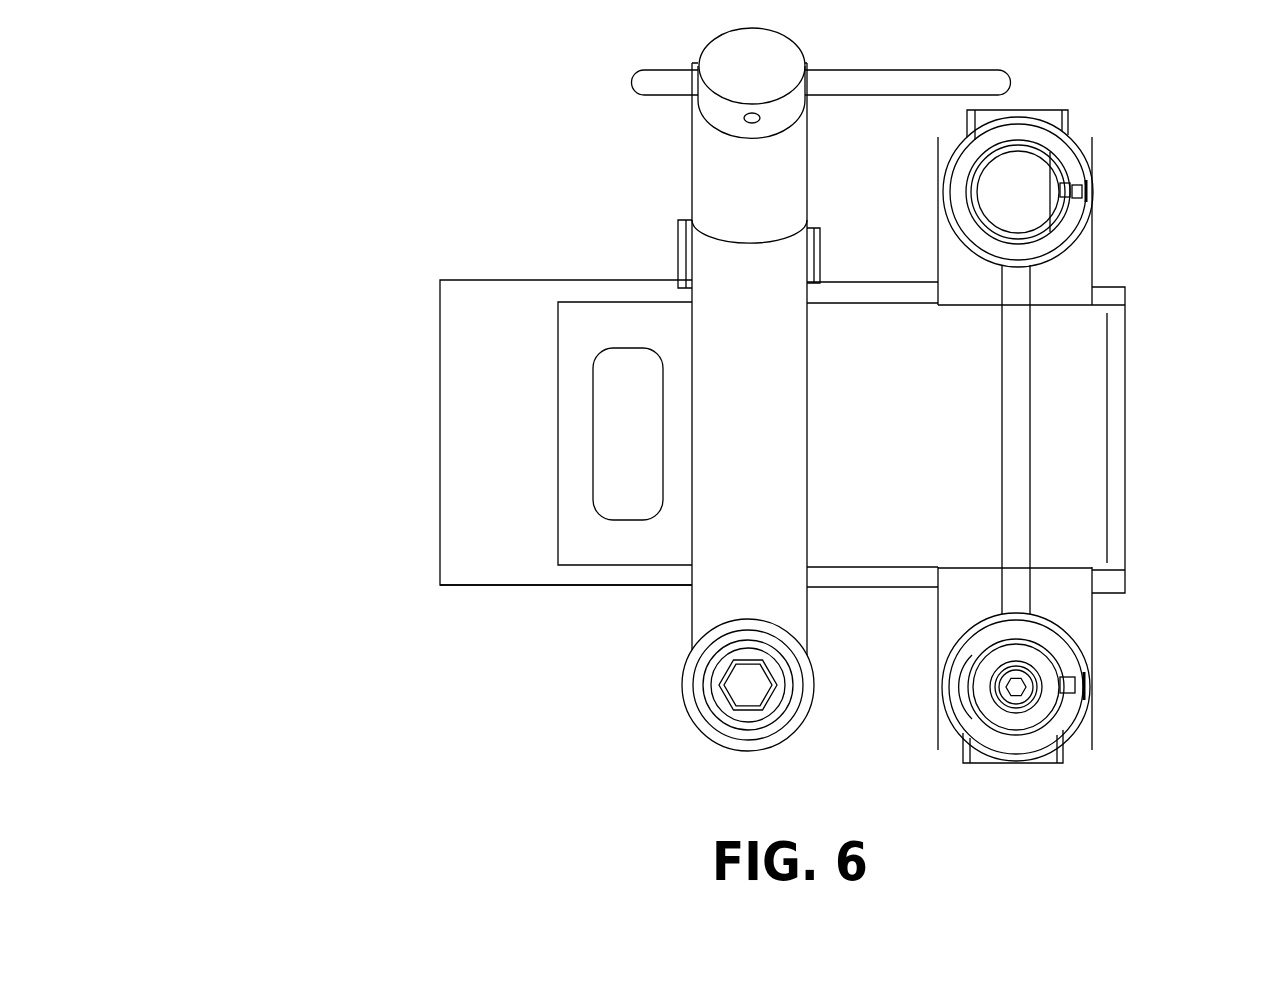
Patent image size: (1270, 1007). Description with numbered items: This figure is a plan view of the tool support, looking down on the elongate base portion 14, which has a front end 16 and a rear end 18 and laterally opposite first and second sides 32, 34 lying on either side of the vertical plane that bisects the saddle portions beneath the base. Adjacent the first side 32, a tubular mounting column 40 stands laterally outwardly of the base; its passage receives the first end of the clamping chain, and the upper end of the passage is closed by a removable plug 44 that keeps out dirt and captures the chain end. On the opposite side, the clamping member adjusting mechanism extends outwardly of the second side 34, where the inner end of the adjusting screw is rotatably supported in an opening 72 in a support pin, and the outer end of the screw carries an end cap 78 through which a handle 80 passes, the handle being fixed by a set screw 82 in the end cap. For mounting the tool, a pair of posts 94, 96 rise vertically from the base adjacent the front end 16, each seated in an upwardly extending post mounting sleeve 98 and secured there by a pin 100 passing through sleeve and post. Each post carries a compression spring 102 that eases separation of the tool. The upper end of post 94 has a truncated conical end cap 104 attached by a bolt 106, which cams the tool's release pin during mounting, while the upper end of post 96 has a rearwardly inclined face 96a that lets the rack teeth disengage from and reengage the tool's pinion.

The base portion 14 is at (848, 590).
The front end 16 is at (1158, 393).
The rear end 18 is at (390, 417).
The first side 32 is at (503, 588).
The second side 34 is at (502, 232).
The tubular mounting column 40 is at (662, 742).
The removable plug 44 is at (747, 685).
The opening 72 is at (677, 252).
The end cap 78 is at (752, 67).
The handle 80 is at (920, 68).
The set screw 82 is at (772, 122).
The post 94 is at (1072, 707).
The post 96 is at (1018, 192).
The face 96a is at (1062, 177).
The post mounting sleeve 98 is at (1062, 235).
The pin 100 is at (1092, 190).
The compression spring 102 is at (1050, 155).
The end cap 104 is at (1060, 730).
The bolt 106 is at (1002, 698).